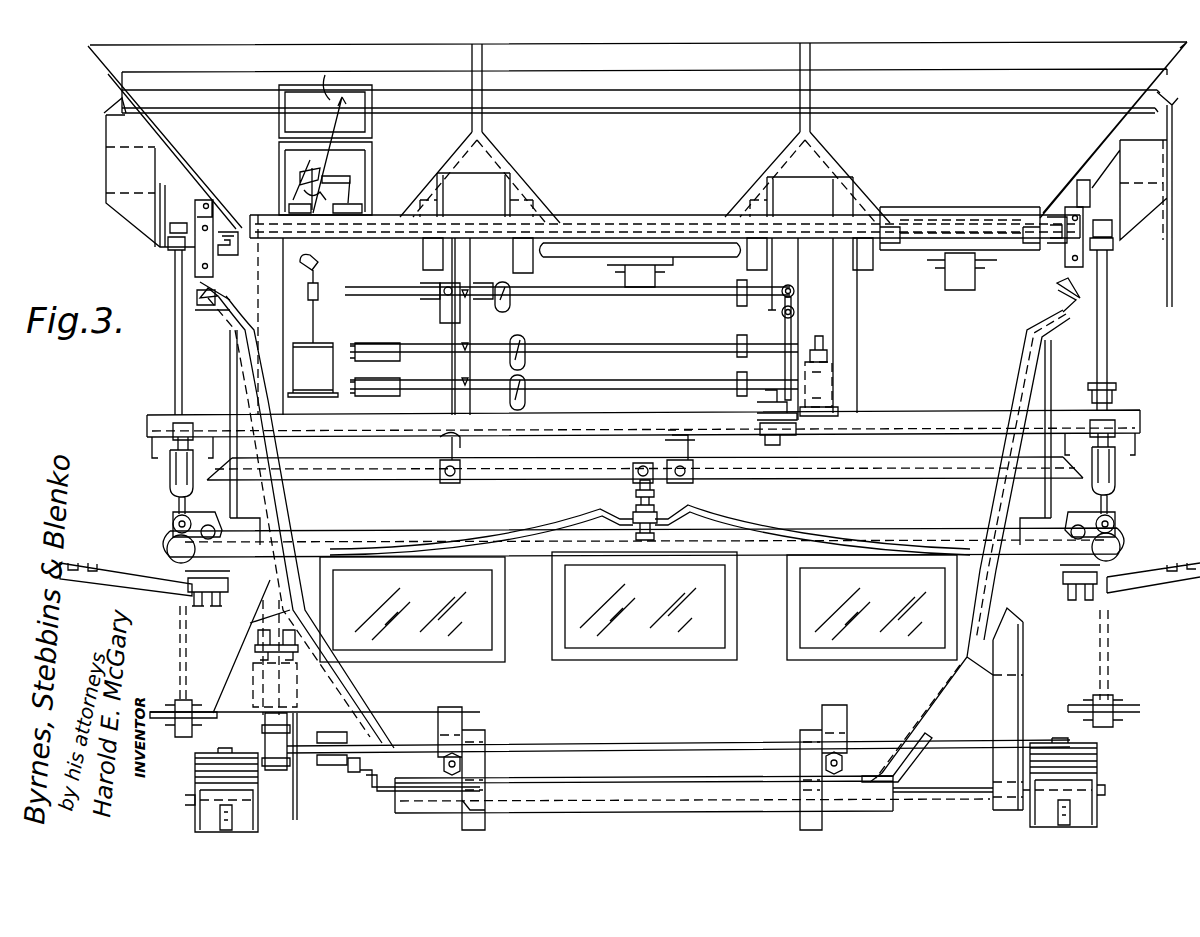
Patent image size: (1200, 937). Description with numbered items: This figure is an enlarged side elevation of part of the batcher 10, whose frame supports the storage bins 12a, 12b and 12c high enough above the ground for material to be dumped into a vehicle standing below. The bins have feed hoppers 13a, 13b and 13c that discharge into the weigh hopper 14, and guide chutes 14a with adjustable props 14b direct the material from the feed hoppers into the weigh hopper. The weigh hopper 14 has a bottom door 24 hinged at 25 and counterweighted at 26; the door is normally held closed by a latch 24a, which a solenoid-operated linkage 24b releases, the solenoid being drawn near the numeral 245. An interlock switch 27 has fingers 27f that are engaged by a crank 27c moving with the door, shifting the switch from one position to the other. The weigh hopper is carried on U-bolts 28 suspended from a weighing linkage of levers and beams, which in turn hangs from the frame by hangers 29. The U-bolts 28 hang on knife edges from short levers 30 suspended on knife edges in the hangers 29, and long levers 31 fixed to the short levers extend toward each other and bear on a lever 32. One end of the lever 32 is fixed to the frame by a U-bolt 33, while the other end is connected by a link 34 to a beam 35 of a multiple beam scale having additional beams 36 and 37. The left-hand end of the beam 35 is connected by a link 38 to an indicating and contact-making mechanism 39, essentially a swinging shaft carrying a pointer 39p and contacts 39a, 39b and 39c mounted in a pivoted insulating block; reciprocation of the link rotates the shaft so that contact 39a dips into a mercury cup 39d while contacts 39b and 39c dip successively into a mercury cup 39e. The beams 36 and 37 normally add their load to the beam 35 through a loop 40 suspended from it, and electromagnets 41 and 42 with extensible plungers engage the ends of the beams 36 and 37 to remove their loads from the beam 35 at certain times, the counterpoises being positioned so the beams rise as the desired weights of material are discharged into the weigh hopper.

The batcher 10 is at (147, 440).
The storage bin 12a is at (130, 58).
The storage bin 12b is at (638, 131).
The storage bin 12c is at (1071, 128).
The feed hopper 13a is at (170, 133).
The feed hopper 13b is at (555, 170).
The feed hopper 13c is at (880, 168).
The weigh hopper 14 is at (663, 708).
The guide chute 14a is at (298, 500).
The adjustable prop 14b is at (110, 567).
The bottom door 24 is at (640, 785).
The latch 24a is at (486, 766).
The linkage 24b is at (265, 745).
The shaft support 245 is at (253, 673).
The hinge 25 is at (950, 795).
The counterweight 26 is at (195, 753).
The interlock switch 27 is at (338, 732).
The crank 27c is at (372, 785).
The fingers 27f is at (352, 772).
The U-bolt 28 is at (188, 572).
The hanger 29 is at (1110, 495).
The short lever 30 is at (195, 523).
The long lever 31 is at (512, 540).
The lever 32 is at (538, 480).
The U-bolt 33 is at (693, 445).
The link 34 is at (452, 402).
The beam 35 is at (560, 300).
The beam 36 is at (608, 356).
The beam 37 is at (606, 401).
The link 38 is at (300, 268).
The indicating and contact-making mechanism 39 is at (374, 146).
The contact 39a is at (352, 185).
The contact 39b is at (296, 172).
The contact 39c is at (304, 192).
The mercury cup 39d is at (363, 207).
The mercury cup 39e is at (289, 208).
The pointer 39p is at (330, 78).
The loop 40 is at (785, 327).
The electromagnet 41 is at (835, 382).
The electromagnet 42 is at (800, 440).